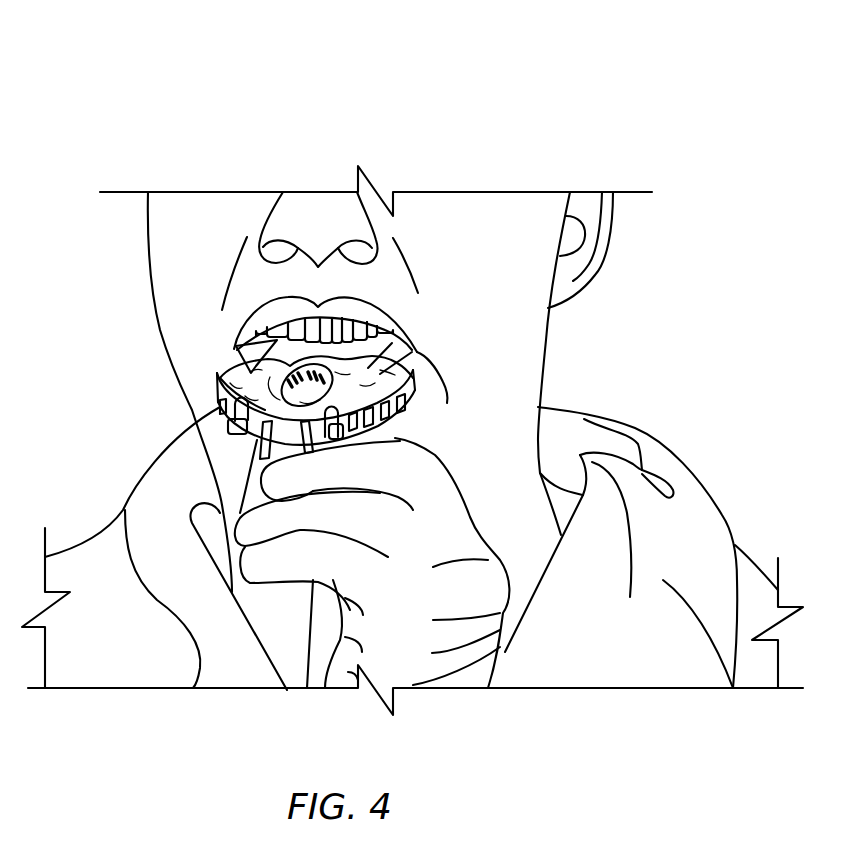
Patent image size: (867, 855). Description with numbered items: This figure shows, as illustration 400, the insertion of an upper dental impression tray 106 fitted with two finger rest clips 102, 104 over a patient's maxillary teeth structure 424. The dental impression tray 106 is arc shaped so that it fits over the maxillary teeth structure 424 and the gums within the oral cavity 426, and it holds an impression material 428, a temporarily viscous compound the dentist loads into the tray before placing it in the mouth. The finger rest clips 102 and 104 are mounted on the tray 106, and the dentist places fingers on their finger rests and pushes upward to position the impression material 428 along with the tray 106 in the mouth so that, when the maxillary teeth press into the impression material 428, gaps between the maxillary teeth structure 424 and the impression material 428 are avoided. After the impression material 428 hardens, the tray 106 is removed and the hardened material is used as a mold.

The oral device in use 400 is at (627, 82).
The finger rest clip 102 is at (219, 438).
The finger rest clip 104 is at (430, 405).
The upper dental impression tray 106 is at (355, 449).
The maxillary teeth structure 424 is at (238, 345).
The oral cavity 426 is at (380, 353).
The impression material 428 is at (216, 376).